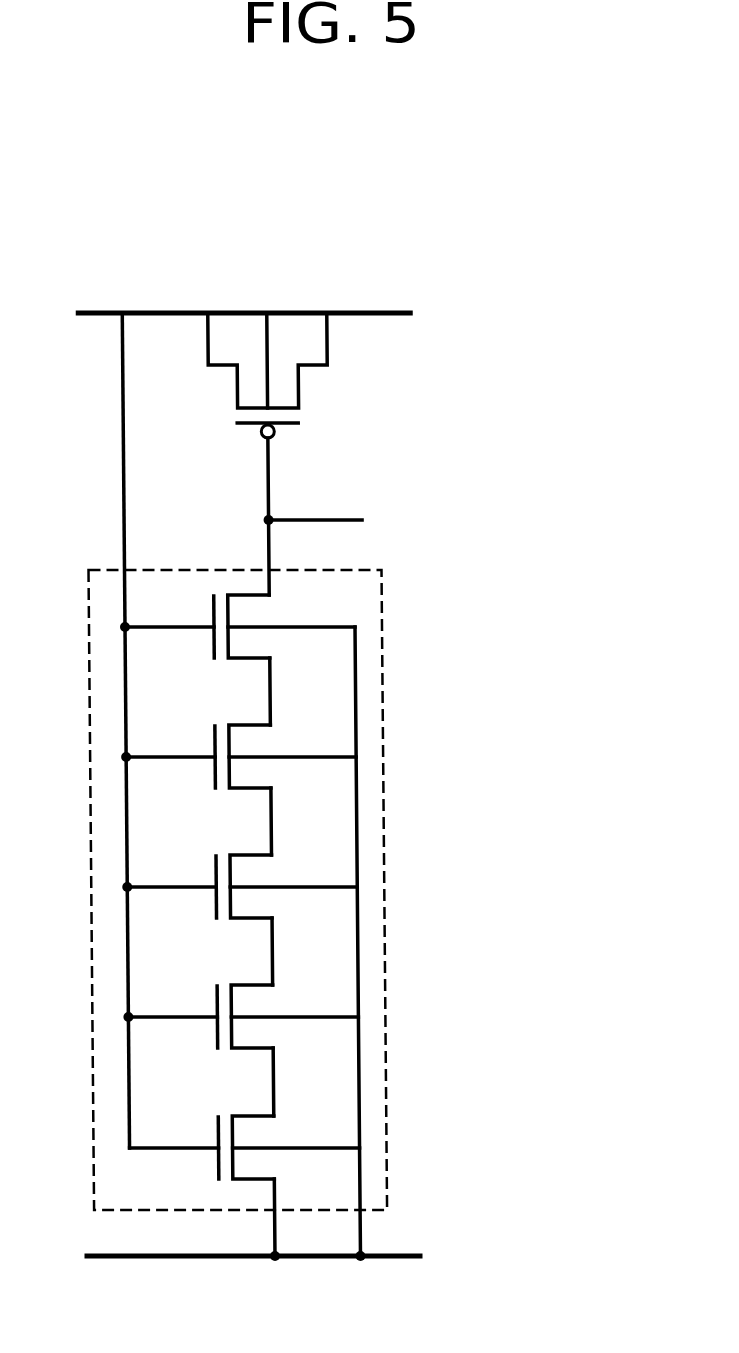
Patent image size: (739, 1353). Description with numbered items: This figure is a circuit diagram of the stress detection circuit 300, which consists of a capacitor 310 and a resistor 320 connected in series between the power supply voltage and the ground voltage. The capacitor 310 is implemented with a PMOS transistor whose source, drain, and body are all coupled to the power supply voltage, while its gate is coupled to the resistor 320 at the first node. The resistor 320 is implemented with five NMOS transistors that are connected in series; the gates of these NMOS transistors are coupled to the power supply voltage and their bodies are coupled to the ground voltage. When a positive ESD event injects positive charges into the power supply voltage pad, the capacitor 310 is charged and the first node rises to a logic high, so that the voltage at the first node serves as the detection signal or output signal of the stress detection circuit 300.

The stress detection circuit 300 is at (252, 201).
The capacitor 310 is at (300, 385).
The resistor 320 is at (382, 615).